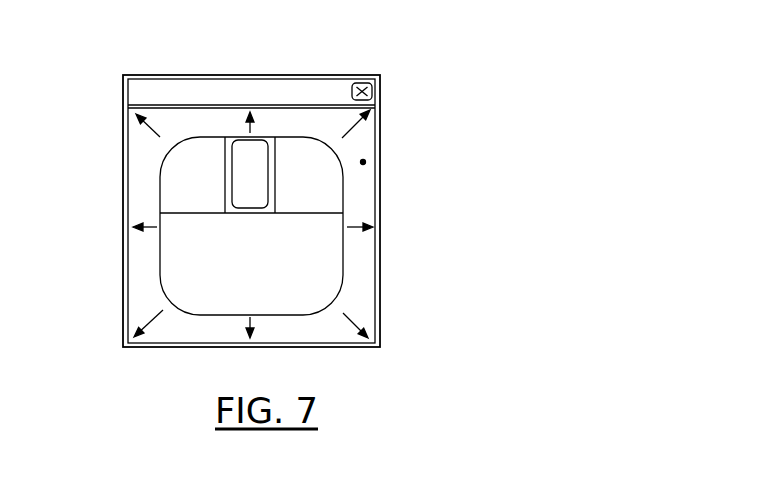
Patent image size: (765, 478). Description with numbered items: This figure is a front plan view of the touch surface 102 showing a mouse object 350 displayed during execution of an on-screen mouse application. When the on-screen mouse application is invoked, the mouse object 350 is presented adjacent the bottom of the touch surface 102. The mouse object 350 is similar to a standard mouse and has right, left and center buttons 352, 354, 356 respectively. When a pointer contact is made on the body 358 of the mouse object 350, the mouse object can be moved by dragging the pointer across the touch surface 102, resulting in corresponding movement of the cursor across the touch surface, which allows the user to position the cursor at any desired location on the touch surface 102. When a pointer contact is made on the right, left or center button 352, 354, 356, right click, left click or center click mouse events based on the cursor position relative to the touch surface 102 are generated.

The mouse object 350 is at (148, 276).
The right button 352 is at (187, 170).
The left button 354 is at (302, 167).
The center button 356 is at (263, 157).
The body 358 is at (343, 268).
The touch surface 102 is at (363, 162).